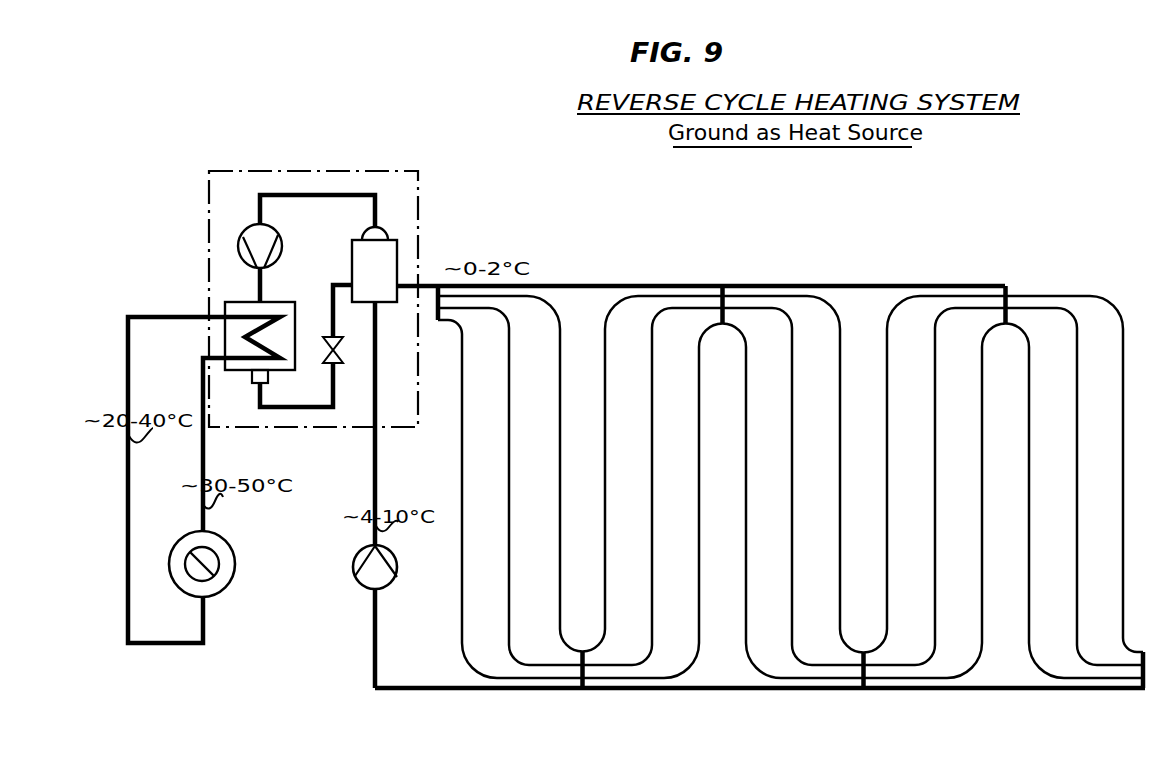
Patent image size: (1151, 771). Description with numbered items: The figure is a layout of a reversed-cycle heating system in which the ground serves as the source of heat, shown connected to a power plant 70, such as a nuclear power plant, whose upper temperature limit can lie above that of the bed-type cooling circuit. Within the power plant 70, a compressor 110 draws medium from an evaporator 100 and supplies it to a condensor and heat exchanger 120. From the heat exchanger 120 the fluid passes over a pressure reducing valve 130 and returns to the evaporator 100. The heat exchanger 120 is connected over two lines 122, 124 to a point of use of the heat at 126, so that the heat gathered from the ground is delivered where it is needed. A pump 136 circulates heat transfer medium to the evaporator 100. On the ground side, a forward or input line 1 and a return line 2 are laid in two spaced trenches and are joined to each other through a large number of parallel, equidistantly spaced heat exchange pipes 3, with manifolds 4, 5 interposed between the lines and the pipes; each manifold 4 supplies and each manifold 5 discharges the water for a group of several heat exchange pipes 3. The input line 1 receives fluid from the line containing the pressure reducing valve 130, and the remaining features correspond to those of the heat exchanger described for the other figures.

The forward or input line 1 is at (875, 286).
The return line 2 is at (770, 690).
The heat exchange pipes 3 is at (463, 468).
The manifolds 4 is at (723, 321).
The manifolds 5 is at (594, 690).
The power plant 70 is at (425, 181).
The evaporator 100 is at (353, 252).
The compressor 110 is at (240, 246).
The condensor and heat exchanger 120 is at (288, 360).
The line 122 is at (176, 456).
The line 124 is at (203, 517).
The point of use of the heat 126 is at (235, 563).
The pressure reducing valve 130 is at (342, 345).
The pump 136 is at (370, 589).